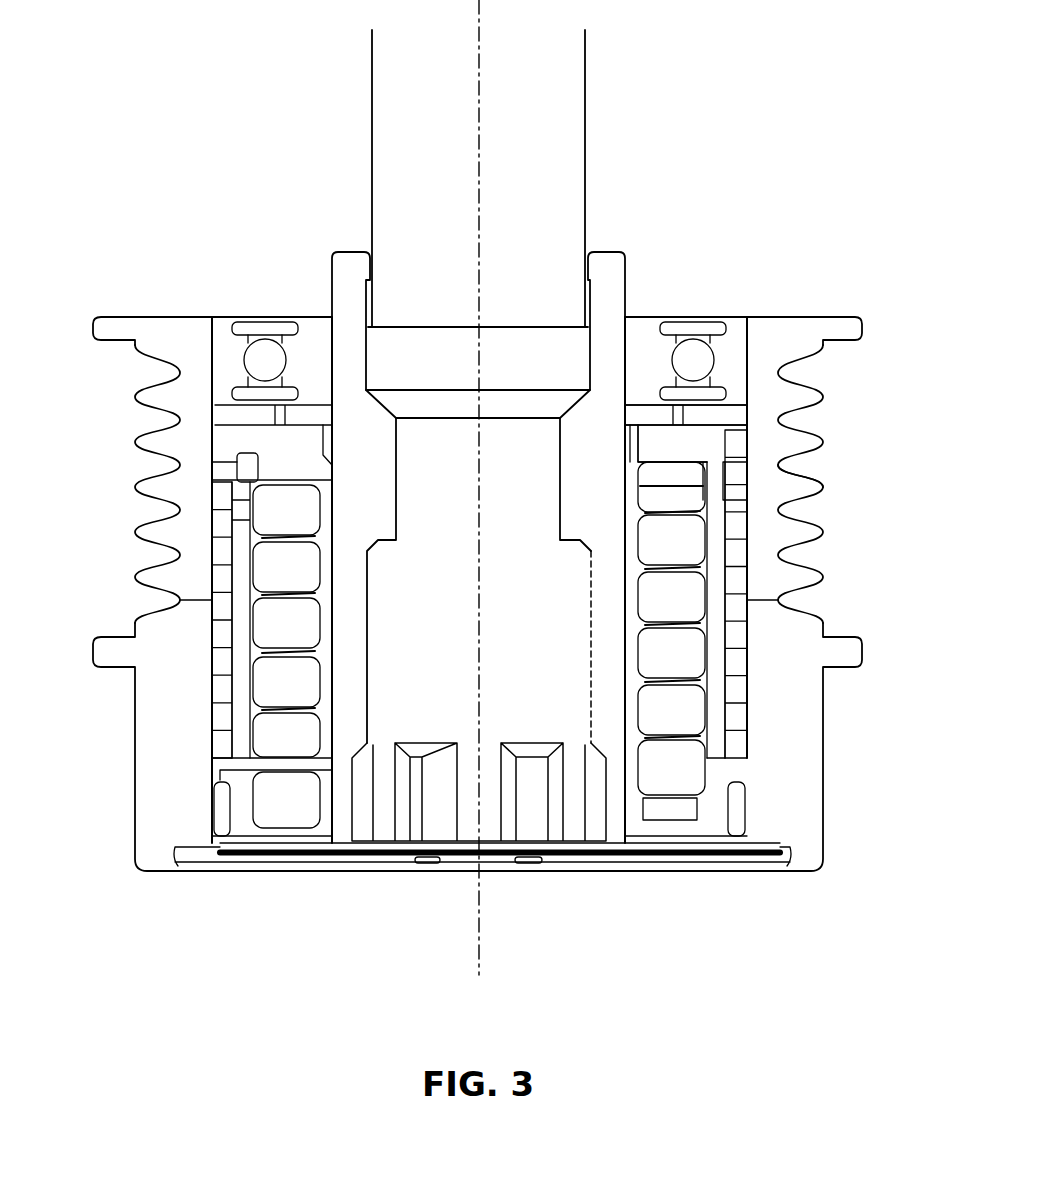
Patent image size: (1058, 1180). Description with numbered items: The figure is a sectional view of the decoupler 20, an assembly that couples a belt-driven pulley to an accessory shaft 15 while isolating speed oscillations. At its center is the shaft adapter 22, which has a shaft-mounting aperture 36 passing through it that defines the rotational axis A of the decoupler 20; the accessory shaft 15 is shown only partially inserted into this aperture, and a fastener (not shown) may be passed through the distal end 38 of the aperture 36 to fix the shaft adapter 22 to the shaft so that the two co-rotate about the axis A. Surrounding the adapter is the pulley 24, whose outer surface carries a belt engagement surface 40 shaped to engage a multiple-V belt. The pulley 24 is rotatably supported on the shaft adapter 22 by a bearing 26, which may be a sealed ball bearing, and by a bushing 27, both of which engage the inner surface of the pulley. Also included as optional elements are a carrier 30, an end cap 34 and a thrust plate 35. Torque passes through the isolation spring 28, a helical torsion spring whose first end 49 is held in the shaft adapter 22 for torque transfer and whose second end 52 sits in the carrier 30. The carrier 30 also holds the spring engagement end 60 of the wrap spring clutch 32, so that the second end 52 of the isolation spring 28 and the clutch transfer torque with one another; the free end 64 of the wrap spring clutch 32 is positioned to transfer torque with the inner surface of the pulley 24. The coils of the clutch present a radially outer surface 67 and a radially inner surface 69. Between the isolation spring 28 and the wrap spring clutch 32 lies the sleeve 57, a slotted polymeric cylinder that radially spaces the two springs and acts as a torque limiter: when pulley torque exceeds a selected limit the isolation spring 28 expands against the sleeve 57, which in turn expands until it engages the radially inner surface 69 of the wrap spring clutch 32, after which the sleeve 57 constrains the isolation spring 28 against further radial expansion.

The accessory shaft 15 is at (400, 167).
The decoupler 20 is at (243, 152).
The shaft adapter 22 is at (607, 412).
The pulley 24 is at (687, 488).
The bearing 26 is at (735, 360).
The bushing 27 is at (738, 807).
The isolation spring 28 is at (687, 597).
The carrier 30 is at (720, 452).
The wrap spring clutch 32 is at (738, 670).
The end cap 34 is at (660, 862).
The thrust plate 35 is at (722, 414).
The shaft-mounting aperture 36 is at (478, 383).
The distal end 38 is at (467, 798).
The belt engagement surface 40 is at (812, 527).
The first end 49 is at (285, 798).
The second end 52 is at (805, 488).
The sleeve 57 is at (716, 633).
The spring engagement end 60 is at (242, 468).
The free end 64 is at (220, 710).
The radially outer surface 67 is at (212, 603).
The radially inner surface 69 is at (237, 630).
The rotational axis A is at (479, 945).